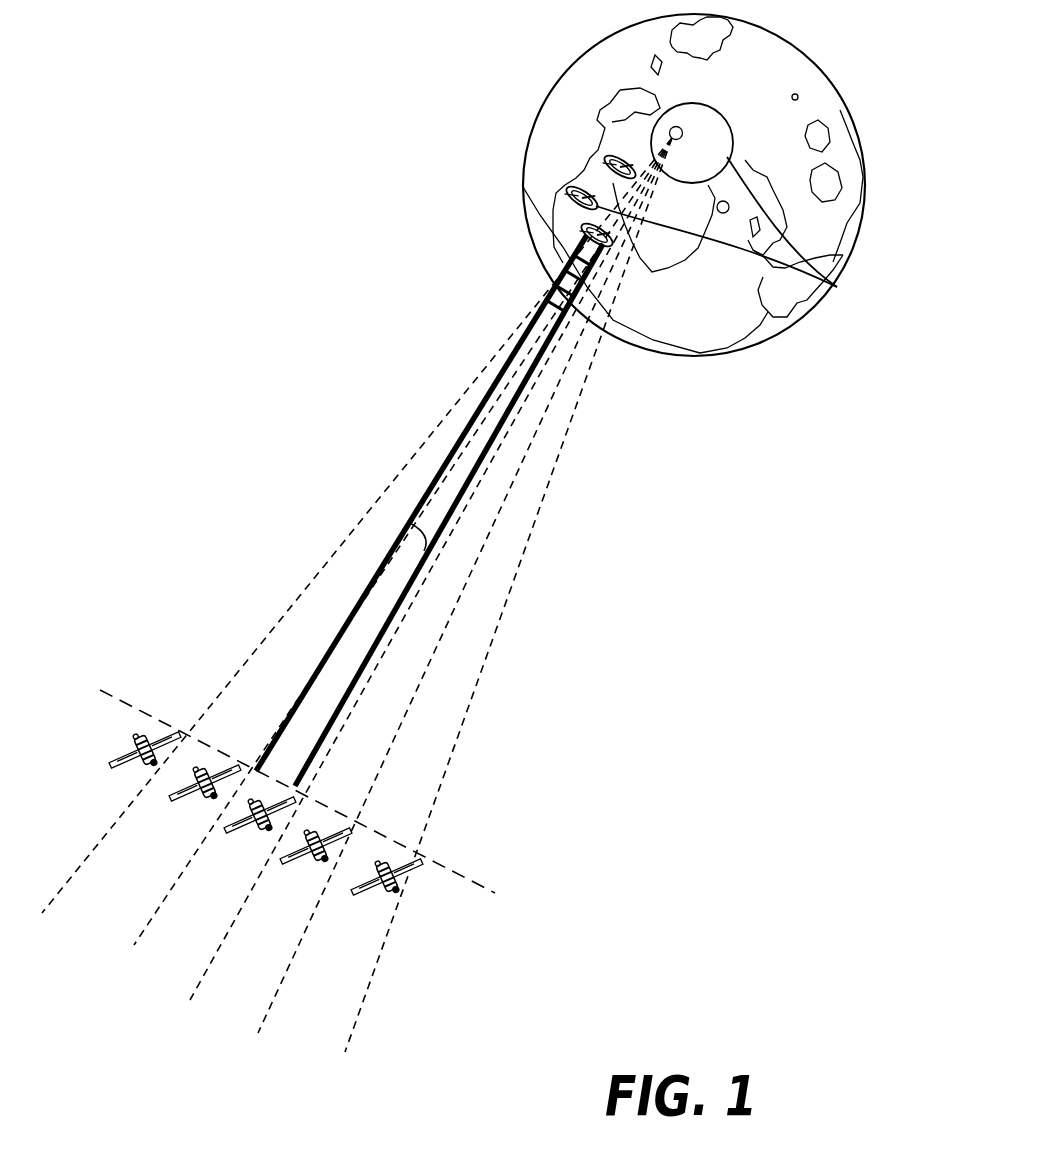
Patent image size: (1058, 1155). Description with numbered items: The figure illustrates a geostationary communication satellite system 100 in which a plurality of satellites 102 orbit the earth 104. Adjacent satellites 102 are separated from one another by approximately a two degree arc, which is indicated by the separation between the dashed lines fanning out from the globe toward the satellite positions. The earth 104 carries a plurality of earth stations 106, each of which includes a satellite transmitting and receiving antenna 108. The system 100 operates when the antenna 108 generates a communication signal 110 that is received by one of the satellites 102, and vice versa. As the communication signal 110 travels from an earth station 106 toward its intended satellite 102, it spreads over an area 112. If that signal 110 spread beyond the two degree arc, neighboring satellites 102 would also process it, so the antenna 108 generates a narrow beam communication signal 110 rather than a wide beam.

The geostationary communication satellite system 100 is at (236, 249).
The satellites 102 is at (348, 595).
The earth 104 is at (820, 331).
The earth stations 106 is at (666, 148).
The satellite transmitting and receiving antenna 108 is at (557, 227).
The communication signal 110 is at (332, 744).
The area 112 is at (440, 522).